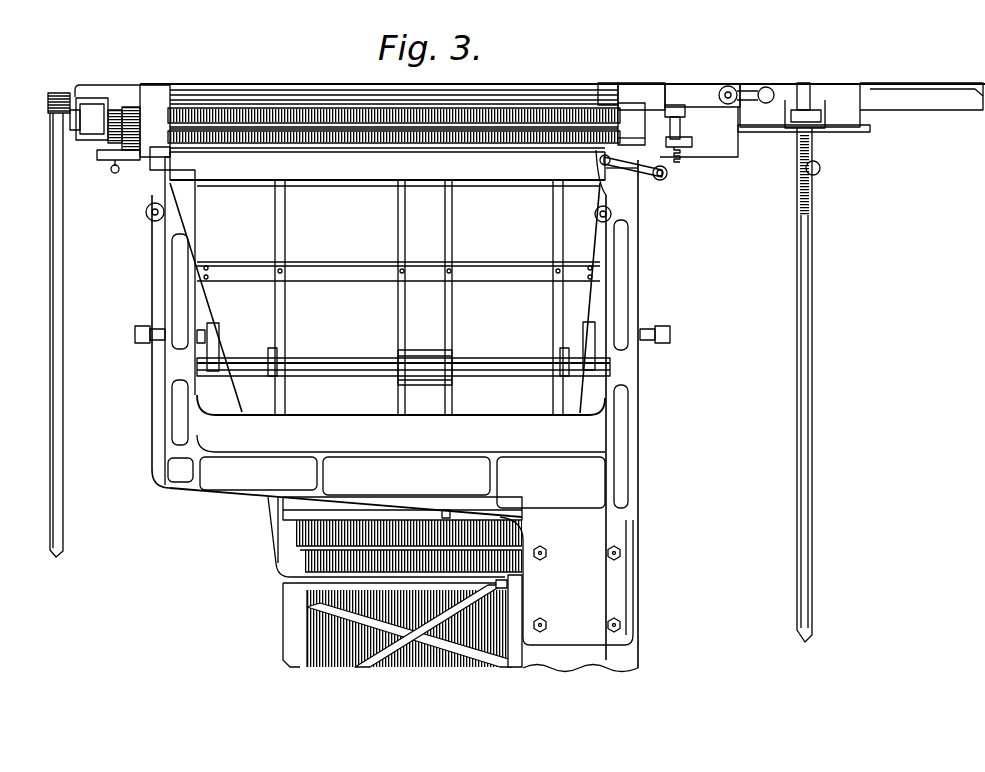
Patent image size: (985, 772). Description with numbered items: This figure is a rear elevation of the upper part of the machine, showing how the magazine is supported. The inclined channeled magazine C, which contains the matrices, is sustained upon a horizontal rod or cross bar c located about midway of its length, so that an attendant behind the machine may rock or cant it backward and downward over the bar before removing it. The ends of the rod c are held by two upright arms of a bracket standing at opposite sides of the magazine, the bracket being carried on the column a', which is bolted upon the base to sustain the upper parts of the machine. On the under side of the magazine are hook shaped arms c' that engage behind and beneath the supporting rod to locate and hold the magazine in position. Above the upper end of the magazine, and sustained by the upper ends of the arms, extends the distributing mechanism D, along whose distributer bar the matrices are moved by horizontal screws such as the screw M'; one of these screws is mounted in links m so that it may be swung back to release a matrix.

The distributing mechanism D is at (345, 108).
The horizontal screw M' is at (394, 92).
The links m is at (416, 114).
The inclined channeled magazine C is at (387, 297).
The horizontal rod or cross bar c is at (403, 377).
The hook shaped arms c' is at (405, 346).
The column a' is at (569, 594).